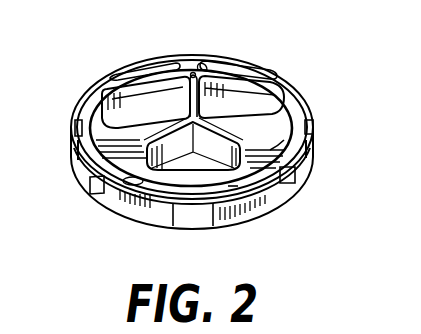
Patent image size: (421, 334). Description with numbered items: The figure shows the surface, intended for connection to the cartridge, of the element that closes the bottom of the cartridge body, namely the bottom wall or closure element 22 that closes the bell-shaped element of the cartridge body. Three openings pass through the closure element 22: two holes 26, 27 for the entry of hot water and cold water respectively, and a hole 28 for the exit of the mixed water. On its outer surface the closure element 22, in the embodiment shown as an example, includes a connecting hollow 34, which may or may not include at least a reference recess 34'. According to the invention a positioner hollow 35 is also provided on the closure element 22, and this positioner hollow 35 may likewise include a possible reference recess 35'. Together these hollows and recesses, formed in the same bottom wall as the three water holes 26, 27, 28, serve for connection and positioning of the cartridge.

The bottom wall or closure element 22 is at (103, 186).
The hole for the entry of hot water 26 is at (258, 112).
The hole for the entry of cold water 27 is at (123, 110).
The hole for the exit of the mixed water 28 is at (191, 160).
The connecting hollow 34 is at (311, 161).
The reference recess 34' is at (248, 227).
The positioner hollow 35 is at (216, 41).
The reference recess 35' is at (145, 55).